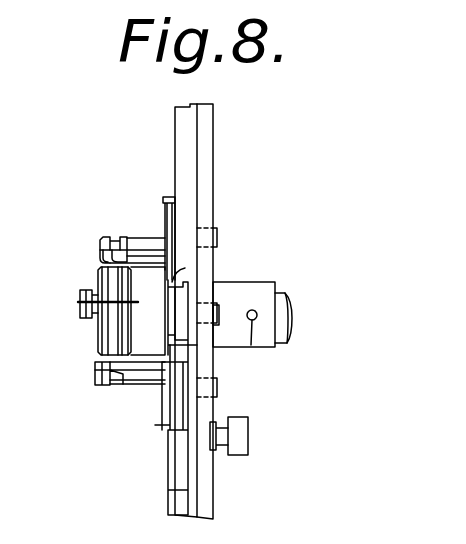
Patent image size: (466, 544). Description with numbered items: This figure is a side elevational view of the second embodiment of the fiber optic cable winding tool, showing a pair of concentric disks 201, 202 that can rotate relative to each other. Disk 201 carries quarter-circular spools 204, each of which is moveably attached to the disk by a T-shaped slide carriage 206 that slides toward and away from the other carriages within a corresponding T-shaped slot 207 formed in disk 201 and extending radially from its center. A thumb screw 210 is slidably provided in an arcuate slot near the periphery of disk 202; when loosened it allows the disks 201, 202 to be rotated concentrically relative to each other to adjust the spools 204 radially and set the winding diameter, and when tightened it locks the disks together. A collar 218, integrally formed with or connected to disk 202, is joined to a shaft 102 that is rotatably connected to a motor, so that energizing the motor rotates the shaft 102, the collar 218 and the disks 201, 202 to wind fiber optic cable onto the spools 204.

The disk 201 is at (182, 125).
The disk 202 is at (207, 142).
The quarter-circular spool 204 is at (102, 252).
The T-shaped slide carriage 206 is at (173, 313).
The T-shaped slot 207 is at (185, 268).
The thumb screw 210 is at (248, 435).
The collar 218 is at (251, 345).
The shaft 102 is at (282, 330).